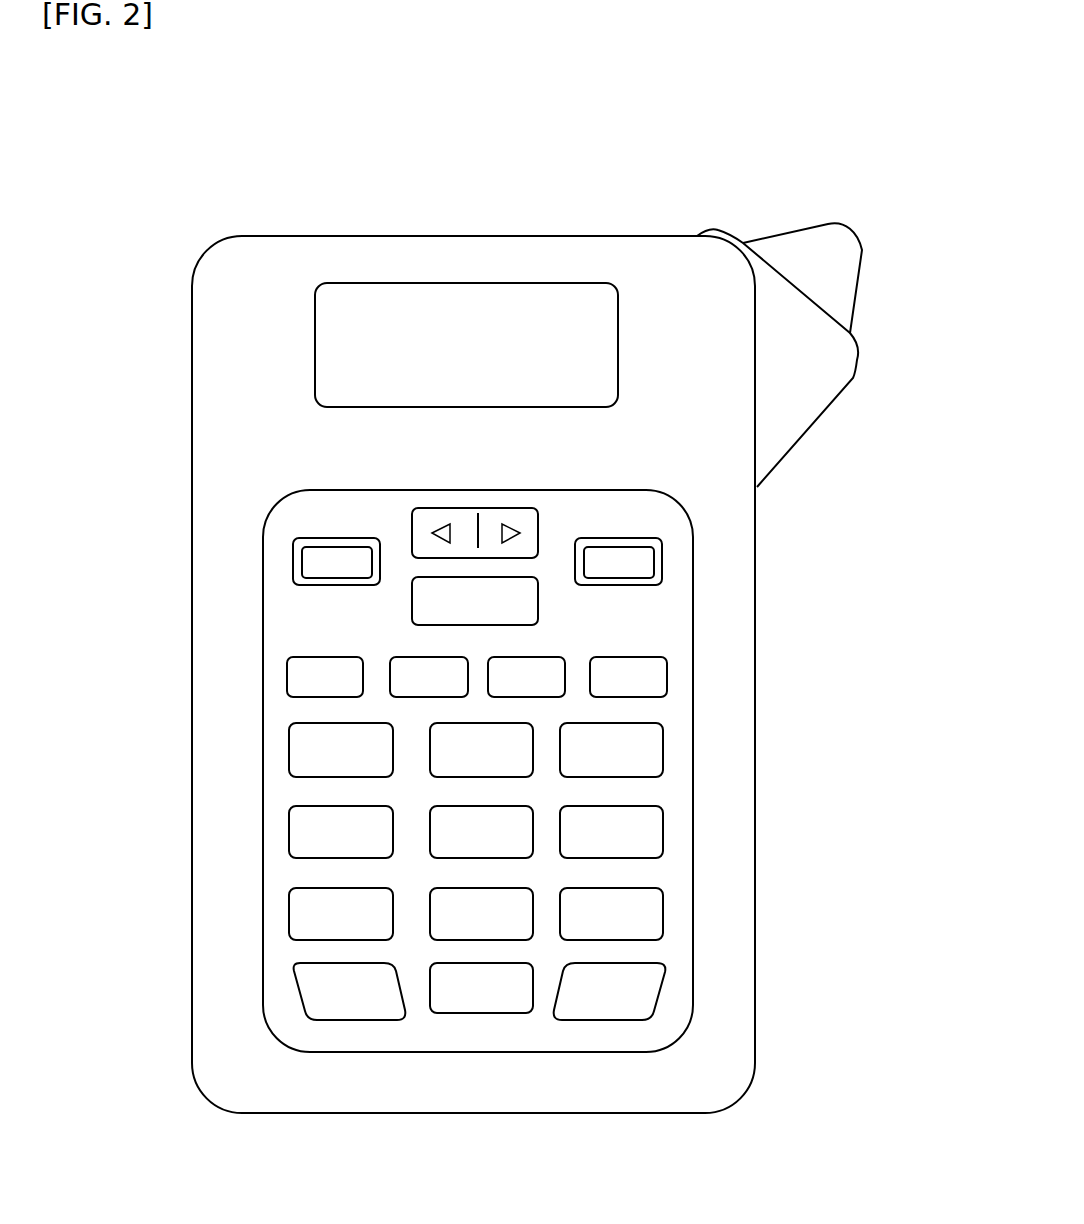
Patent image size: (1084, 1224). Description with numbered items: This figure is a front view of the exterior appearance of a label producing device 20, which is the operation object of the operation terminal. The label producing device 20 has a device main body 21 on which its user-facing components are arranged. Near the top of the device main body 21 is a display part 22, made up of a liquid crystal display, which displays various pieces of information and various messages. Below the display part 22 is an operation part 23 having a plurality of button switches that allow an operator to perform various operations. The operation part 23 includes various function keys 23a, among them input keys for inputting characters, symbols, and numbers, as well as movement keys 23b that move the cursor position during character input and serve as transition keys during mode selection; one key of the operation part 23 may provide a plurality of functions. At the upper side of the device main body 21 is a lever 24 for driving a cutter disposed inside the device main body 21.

The label producing device 20 is at (152, 250).
The device main body 21 is at (205, 743).
The display part 22 is at (453, 289).
The operation part 23 is at (632, 517).
The function keys 23a is at (300, 562).
The movement keys 23b is at (487, 522).
The lever 24 is at (845, 294).